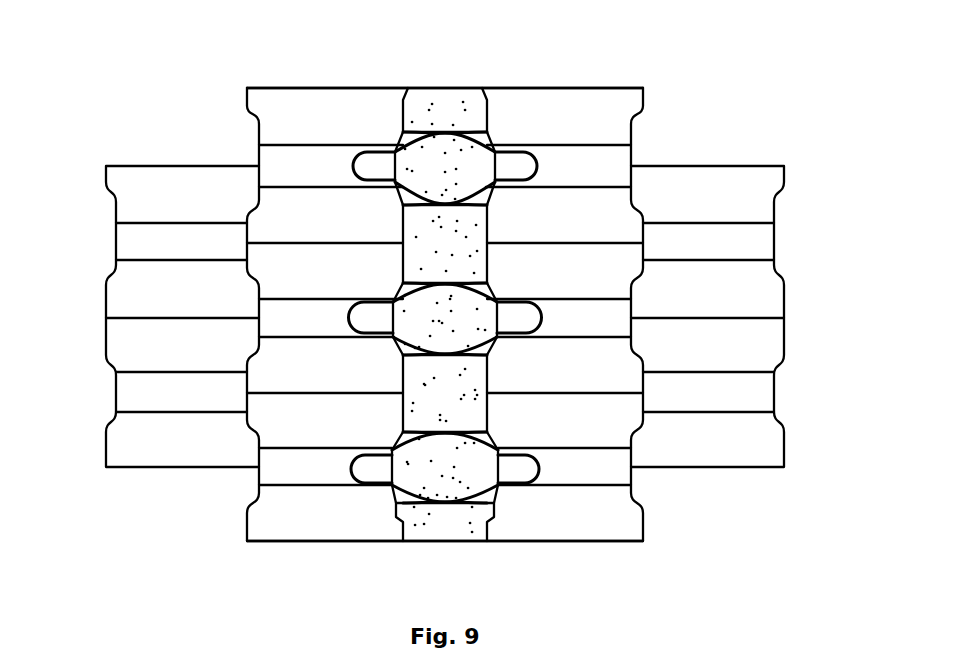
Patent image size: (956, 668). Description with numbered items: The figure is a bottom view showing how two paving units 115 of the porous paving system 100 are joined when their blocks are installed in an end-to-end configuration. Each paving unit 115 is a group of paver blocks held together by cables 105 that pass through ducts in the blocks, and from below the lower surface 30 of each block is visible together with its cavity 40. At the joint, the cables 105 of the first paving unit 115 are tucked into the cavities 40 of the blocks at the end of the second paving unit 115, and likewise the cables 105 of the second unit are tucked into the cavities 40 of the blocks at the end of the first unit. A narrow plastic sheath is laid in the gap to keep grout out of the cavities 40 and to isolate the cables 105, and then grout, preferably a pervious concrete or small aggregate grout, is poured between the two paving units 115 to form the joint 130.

The porous paving system 100 is at (757, 91).
The cable 105 is at (472, 128).
The paving unit 115 is at (248, 88).
The joint 130 is at (453, 517).
The lower surface 30 is at (130, 344).
The cavity 40 is at (132, 235).